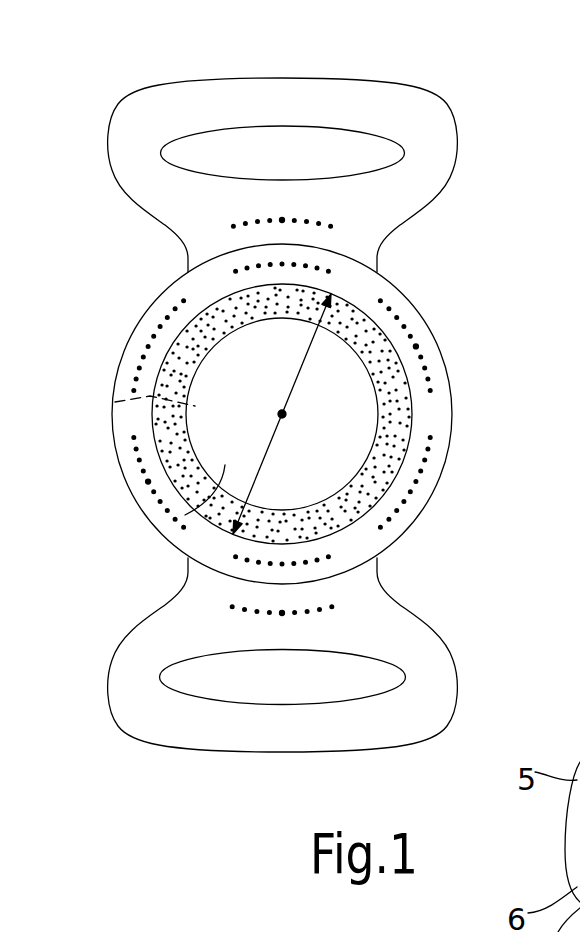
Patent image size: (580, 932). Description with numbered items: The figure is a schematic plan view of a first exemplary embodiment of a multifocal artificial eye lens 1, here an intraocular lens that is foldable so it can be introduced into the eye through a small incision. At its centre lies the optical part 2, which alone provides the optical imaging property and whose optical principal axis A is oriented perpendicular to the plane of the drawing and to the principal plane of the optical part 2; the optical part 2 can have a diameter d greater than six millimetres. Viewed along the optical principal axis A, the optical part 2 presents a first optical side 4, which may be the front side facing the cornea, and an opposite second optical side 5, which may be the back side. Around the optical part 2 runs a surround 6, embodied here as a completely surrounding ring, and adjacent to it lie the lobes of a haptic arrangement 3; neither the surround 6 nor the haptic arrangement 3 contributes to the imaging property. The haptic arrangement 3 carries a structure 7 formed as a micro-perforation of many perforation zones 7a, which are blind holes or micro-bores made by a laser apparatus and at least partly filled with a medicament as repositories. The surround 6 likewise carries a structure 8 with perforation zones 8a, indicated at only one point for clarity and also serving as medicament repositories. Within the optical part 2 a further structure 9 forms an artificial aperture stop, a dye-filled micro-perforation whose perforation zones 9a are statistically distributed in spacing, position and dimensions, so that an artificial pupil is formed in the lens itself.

The artificial eye lens 1 is at (291, 407).
The optical part 2 is at (147, 420).
The haptic arrangement 3 is at (395, 70).
The first optical side 4 is at (185, 515).
The second optical side 5 is at (115, 402).
The surround 6 is at (433, 412).
The structure of the haptic arrangement 7 is at (260, 213).
The perforation zones 7a is at (282, 220).
The structure of the surround 8 is at (428, 334).
The perforation zones 8a is at (148, 481).
The further structure 9 is at (190, 370).
The perforation zones 9a is at (180, 367).
The optical principal axis A is at (282, 414).
The diameter d is at (273, 440).